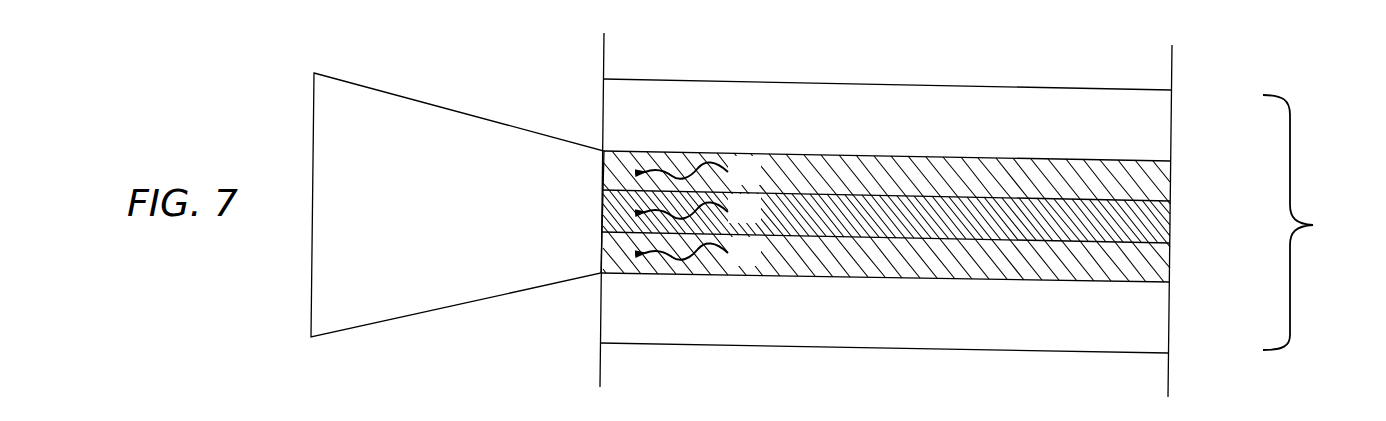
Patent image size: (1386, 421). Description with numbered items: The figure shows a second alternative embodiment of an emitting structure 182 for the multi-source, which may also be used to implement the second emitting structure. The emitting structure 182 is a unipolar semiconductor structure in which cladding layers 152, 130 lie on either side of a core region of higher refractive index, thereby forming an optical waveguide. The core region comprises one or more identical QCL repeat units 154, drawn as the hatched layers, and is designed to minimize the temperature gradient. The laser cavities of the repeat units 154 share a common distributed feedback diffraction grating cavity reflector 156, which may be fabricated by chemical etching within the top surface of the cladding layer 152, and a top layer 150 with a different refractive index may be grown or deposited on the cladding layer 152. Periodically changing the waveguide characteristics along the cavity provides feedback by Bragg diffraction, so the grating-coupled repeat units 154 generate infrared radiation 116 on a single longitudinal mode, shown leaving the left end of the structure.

The infrared radiation 116 is at (457, 205).
The top layer 150 is at (851, 83).
The distributed feedback diffraction grating cavity reflector 156 is at (986, 108).
The cladding layer 152 is at (1172, 139).
The QCL repeat units 154 is at (1172, 180).
The cladding layer 130 is at (765, 323).
The emitting structure 182 is at (1323, 222).